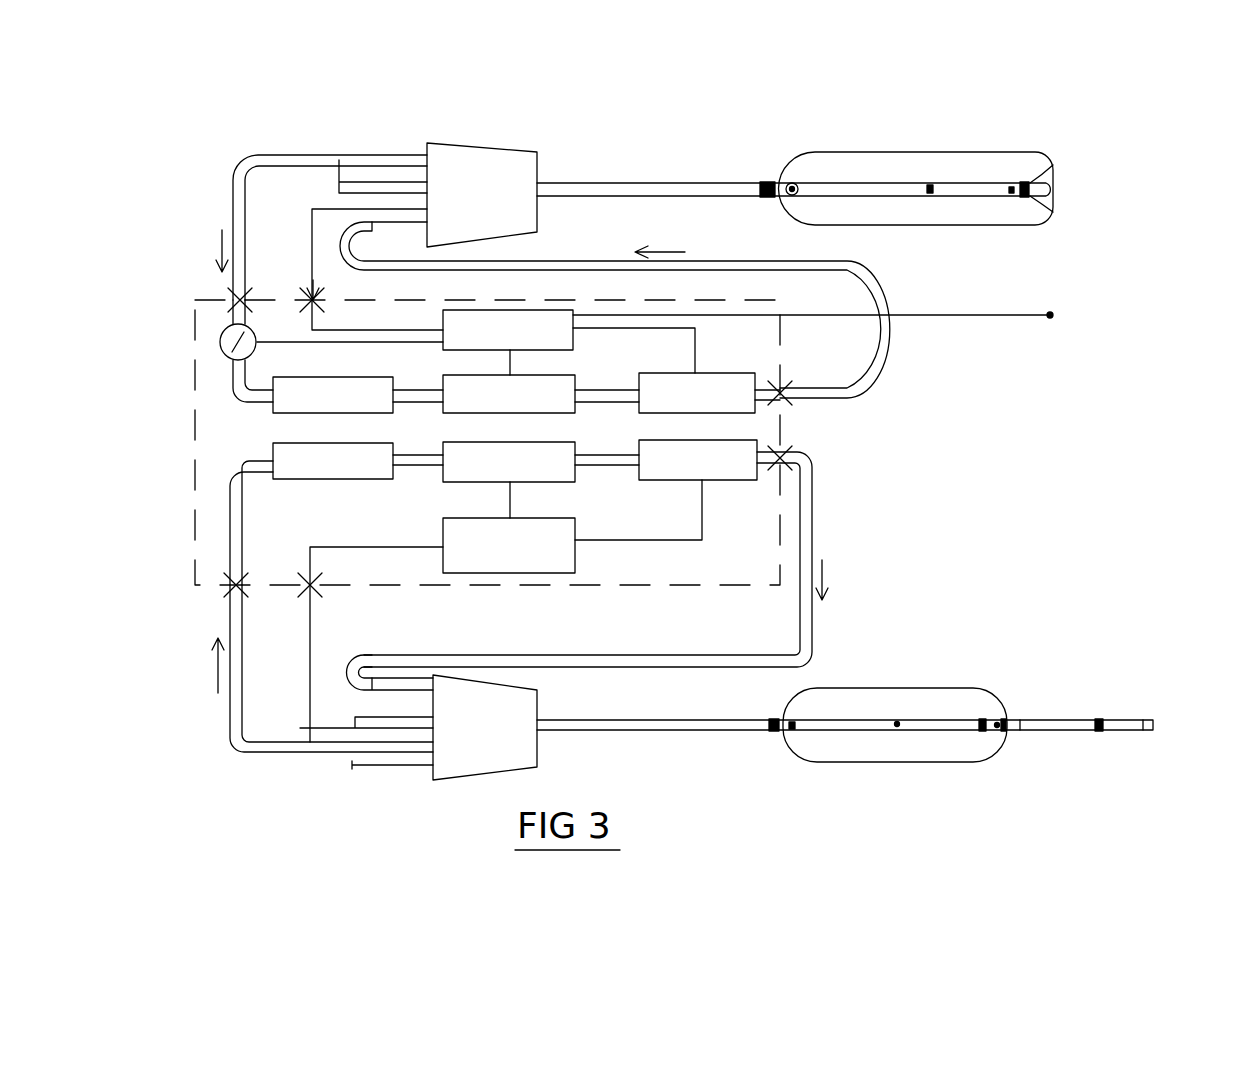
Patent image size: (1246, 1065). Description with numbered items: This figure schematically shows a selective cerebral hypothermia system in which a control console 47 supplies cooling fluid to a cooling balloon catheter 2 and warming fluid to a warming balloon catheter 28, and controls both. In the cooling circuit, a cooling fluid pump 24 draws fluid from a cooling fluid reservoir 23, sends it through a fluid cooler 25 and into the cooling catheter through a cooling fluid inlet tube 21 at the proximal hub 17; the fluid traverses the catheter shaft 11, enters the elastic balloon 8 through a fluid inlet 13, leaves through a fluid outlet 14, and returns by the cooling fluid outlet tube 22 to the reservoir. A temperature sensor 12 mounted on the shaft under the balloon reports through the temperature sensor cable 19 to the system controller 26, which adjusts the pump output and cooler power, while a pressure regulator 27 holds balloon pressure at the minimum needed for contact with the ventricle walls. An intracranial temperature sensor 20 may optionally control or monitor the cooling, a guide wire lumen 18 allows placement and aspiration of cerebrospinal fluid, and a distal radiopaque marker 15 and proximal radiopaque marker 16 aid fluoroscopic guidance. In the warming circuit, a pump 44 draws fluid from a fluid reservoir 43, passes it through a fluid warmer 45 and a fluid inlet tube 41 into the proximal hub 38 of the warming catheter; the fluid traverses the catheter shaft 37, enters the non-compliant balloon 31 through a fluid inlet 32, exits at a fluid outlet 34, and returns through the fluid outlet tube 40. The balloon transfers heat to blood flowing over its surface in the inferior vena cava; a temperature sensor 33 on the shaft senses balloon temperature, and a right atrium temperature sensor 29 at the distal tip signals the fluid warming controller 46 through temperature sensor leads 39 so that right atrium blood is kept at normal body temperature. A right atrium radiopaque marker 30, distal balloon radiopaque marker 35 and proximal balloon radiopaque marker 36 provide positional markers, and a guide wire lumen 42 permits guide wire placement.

The cooling balloon catheter 2 is at (691, 120).
The elastic balloon 8 is at (917, 156).
The catheter shaft 11 is at (793, 155).
The temperature sensor 12 is at (995, 152).
The fluid inlet 13 is at (1047, 219).
The fluid outlet 14 is at (849, 133).
The distal radiopaque marker 15 is at (1092, 143).
The proximal radiopaque marker 16 is at (809, 136).
The proximal hub 17 is at (521, 178).
The guide wire lumen 18 is at (761, 125).
The temperature sensor cable 19 is at (354, 171).
The intracranial temperature sensor 20 is at (866, 300).
The cooling fluid inlet tube 21 is at (615, 242).
The cooling fluid outlet tube 22 is at (349, 187).
The cooling fluid reservoir 23 is at (274, 421).
The cooling fluid pump 24 is at (603, 275).
The fluid cooler 25 is at (742, 376).
The system controller 26 is at (569, 245).
The pressure regulator 27 is at (290, 282).
The warming balloon catheter 28 is at (845, 705).
The right atrium temperature sensor 29 is at (1186, 688).
The right atrium radiopaque marker 30 is at (1147, 668).
The non-compliant balloon 31 is at (1018, 670).
The fluid inlet 32 is at (1049, 685).
The temperature sensor 33 is at (941, 674).
The fluid outlet 34 is at (848, 671).
The distal balloon radiopaque marker 35 is at (948, 680).
The proximal balloon radiopaque marker 36 is at (813, 768).
The catheter shaft 37 is at (687, 775).
The proximal hub 38 is at (518, 727).
The temperature sensor leads 39 is at (385, 798).
The fluid outlet tube 40 is at (331, 706).
The fluid inlet tube 41 is at (423, 642).
The guide wire lumen 42 is at (757, 779).
The fluid reservoir 43 is at (282, 537).
The pump 44 is at (488, 543).
The fluid warmer 45 is at (634, 556).
The fluid warming controller 46 is at (602, 630).
The control console 47 is at (585, 442).